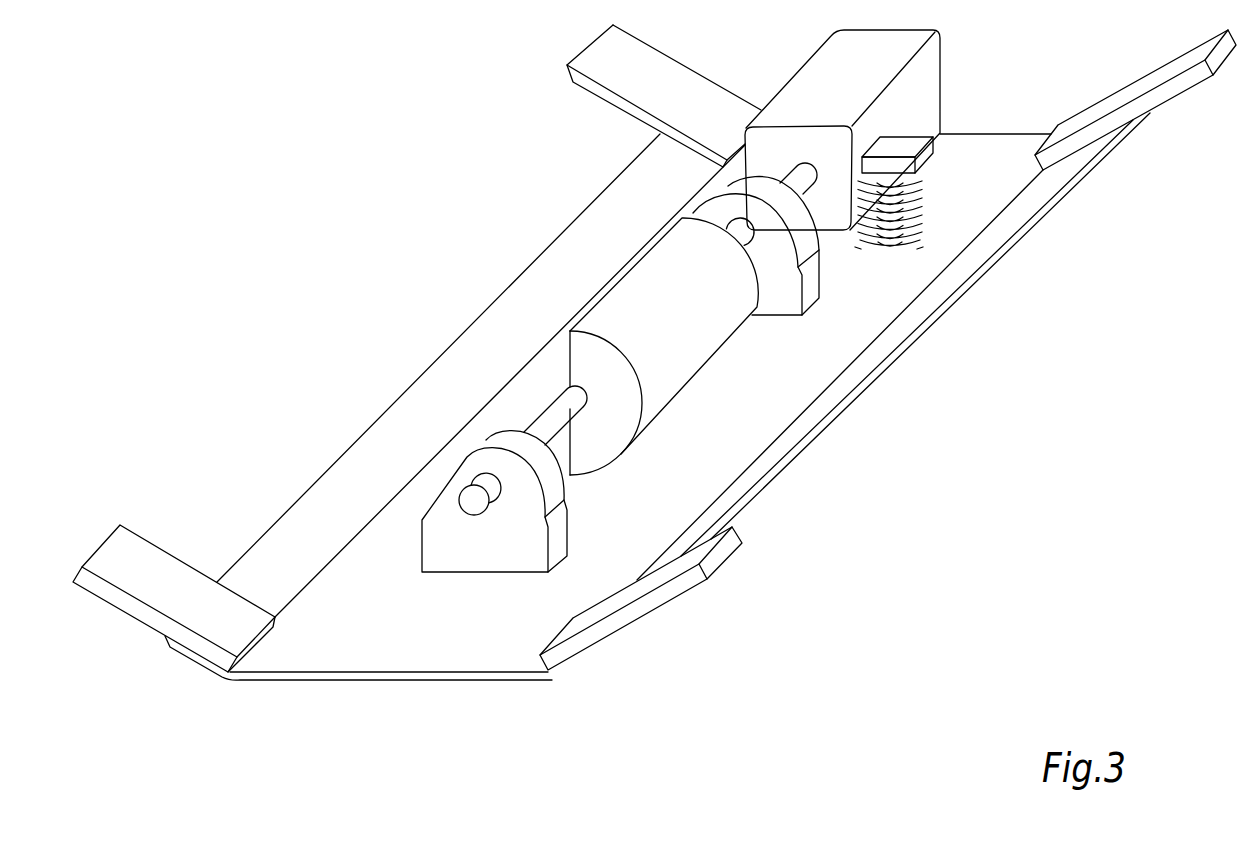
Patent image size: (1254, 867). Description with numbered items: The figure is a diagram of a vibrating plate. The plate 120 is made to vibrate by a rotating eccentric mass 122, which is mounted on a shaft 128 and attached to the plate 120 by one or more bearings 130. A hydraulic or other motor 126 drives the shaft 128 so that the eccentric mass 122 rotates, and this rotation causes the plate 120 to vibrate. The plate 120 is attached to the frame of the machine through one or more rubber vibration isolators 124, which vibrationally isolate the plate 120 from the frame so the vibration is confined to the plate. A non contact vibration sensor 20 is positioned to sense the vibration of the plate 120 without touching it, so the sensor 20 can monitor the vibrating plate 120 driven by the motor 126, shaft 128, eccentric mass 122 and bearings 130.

The non contact vibration sensor 20 is at (933, 158).
The plate 120 is at (323, 683).
The eccentric mass 122 is at (697, 369).
The rubber vibration isolators 124 is at (642, 47).
The motor 126 is at (933, 90).
The shaft 128 is at (540, 414).
The bearings 130 is at (523, 568).